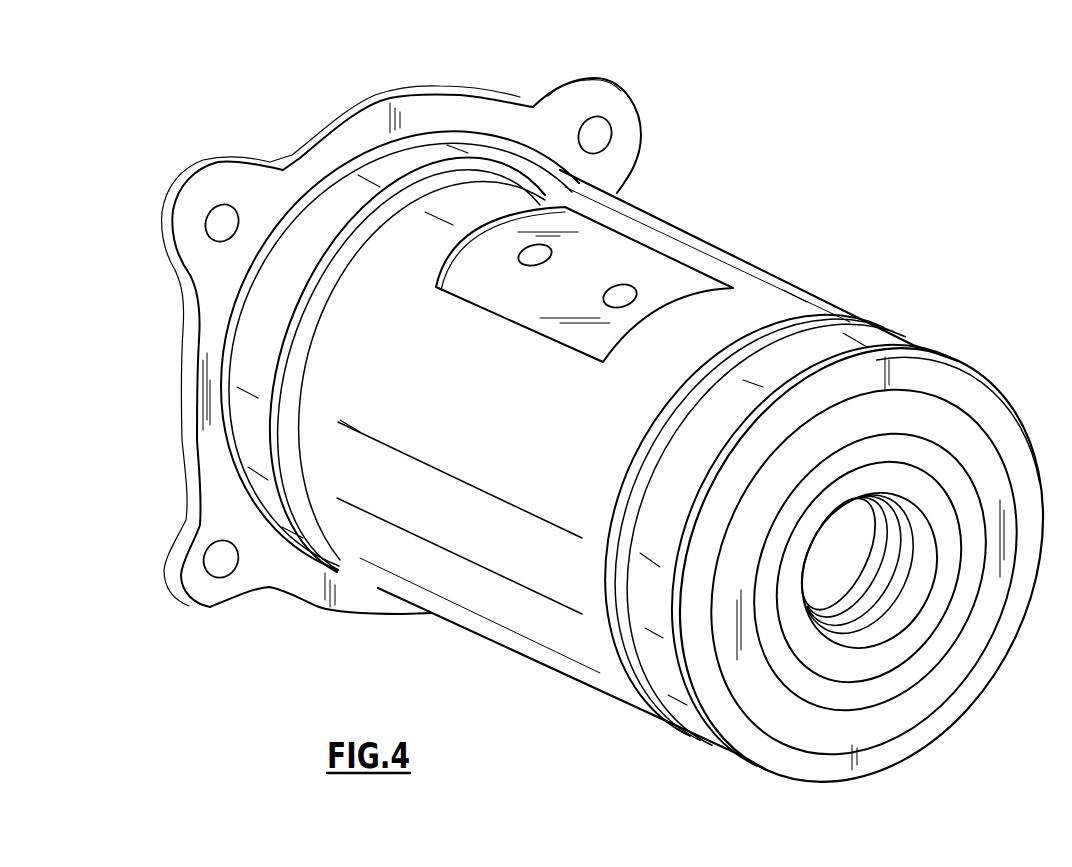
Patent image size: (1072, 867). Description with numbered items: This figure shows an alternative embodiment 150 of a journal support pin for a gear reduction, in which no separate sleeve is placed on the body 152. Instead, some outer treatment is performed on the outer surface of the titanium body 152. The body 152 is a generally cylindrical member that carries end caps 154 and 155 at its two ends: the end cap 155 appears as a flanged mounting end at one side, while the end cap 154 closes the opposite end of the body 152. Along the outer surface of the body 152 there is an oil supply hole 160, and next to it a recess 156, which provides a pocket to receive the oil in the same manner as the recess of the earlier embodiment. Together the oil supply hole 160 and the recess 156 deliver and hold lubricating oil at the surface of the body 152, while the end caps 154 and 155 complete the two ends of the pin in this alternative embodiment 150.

The alternative embodiment 150 is at (907, 285).
The body 152 is at (763, 333).
The end cap 154 is at (897, 345).
The end cap 155 is at (340, 170).
The recess 156 is at (603, 262).
The oil supply hole 160 is at (537, 256).